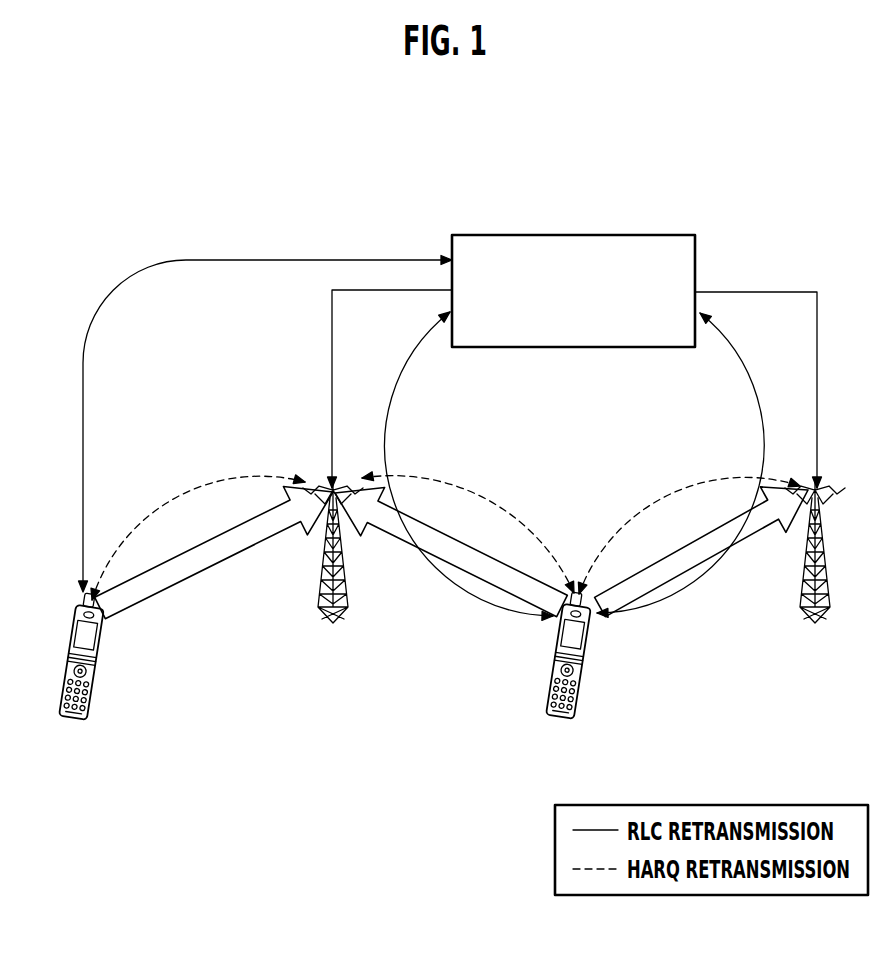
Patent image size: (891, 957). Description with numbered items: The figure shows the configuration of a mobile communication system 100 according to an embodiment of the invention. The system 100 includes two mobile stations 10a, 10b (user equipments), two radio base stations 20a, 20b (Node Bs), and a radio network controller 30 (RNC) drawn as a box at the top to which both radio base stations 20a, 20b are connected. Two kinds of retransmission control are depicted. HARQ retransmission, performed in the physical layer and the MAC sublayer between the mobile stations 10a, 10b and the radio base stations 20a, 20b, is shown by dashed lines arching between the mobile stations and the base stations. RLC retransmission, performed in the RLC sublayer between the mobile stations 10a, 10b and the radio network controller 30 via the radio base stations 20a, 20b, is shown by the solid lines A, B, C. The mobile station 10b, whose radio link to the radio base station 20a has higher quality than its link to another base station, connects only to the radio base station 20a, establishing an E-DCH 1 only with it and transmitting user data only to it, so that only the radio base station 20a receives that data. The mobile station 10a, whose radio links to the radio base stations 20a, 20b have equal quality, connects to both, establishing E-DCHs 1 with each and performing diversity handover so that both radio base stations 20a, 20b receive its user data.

The mobile communication system 100 is at (712, 138).
The radio network controller 30 is at (578, 235).
The E-DCH 1 is at (167, 590).
The radio base station 20a is at (320, 580).
The radio base station 20b is at (801, 589).
The mobile station 10a is at (549, 690).
The mobile station 10b is at (75, 718).
The solid line A is at (83, 417).
The solid line B is at (393, 385).
The solid line C is at (761, 418).